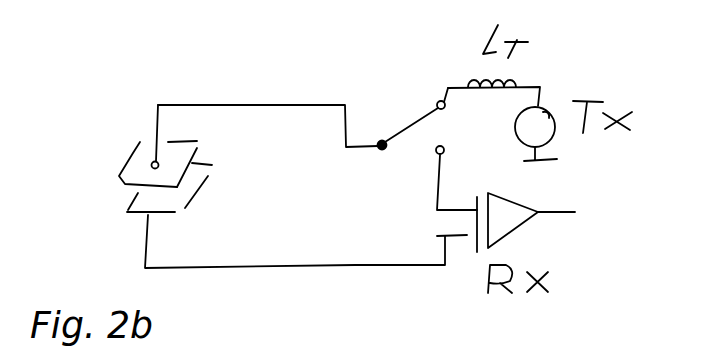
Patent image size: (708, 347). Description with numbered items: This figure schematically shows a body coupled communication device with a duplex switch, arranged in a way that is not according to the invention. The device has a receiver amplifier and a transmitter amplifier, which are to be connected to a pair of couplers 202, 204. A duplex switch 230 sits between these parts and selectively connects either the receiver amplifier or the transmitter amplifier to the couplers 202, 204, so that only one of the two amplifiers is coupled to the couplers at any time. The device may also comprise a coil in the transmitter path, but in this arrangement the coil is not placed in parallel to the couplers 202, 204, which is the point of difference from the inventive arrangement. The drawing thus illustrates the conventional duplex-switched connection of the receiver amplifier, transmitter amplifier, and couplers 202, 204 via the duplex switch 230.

The coupler 202 is at (142, 157).
The coupler 204 is at (145, 207).
The duplex switch 230 is at (409, 120).